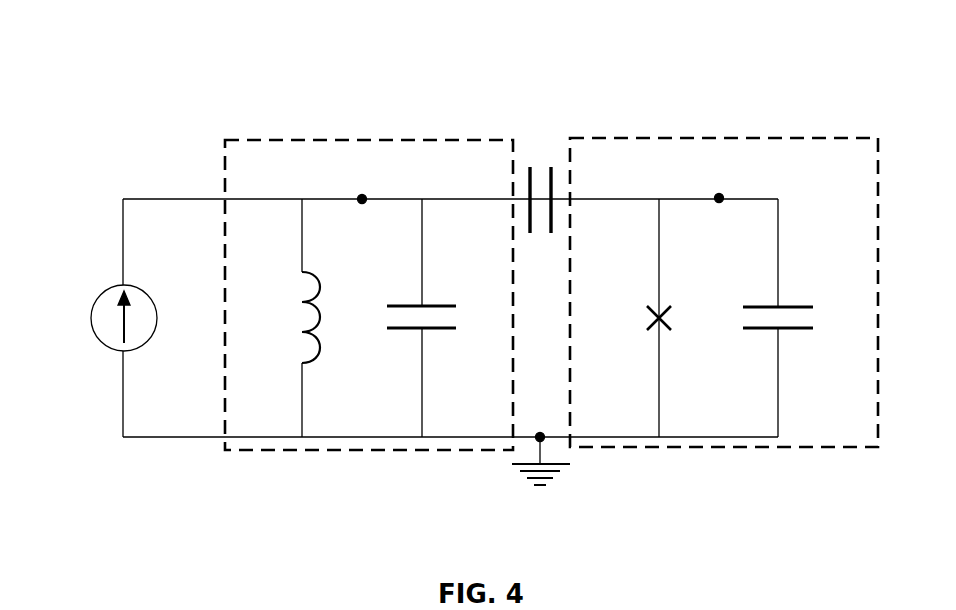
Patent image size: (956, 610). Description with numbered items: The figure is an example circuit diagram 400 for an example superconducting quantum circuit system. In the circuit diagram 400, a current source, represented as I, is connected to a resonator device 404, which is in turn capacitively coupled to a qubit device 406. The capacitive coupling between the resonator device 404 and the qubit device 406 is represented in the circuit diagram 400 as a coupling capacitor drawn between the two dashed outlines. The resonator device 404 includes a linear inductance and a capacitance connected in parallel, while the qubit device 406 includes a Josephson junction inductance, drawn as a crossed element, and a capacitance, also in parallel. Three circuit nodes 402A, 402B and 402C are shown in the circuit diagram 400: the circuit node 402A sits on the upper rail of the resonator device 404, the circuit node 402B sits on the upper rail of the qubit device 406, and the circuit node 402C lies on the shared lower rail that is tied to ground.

The circuit diagram 400 is at (163, 55).
The circuit node 402A is at (362, 199).
The circuit node 402B is at (719, 198).
The circuit node 402C is at (540, 437).
The resonator device 404 is at (225, 185).
The qubit device 406 is at (838, 138).